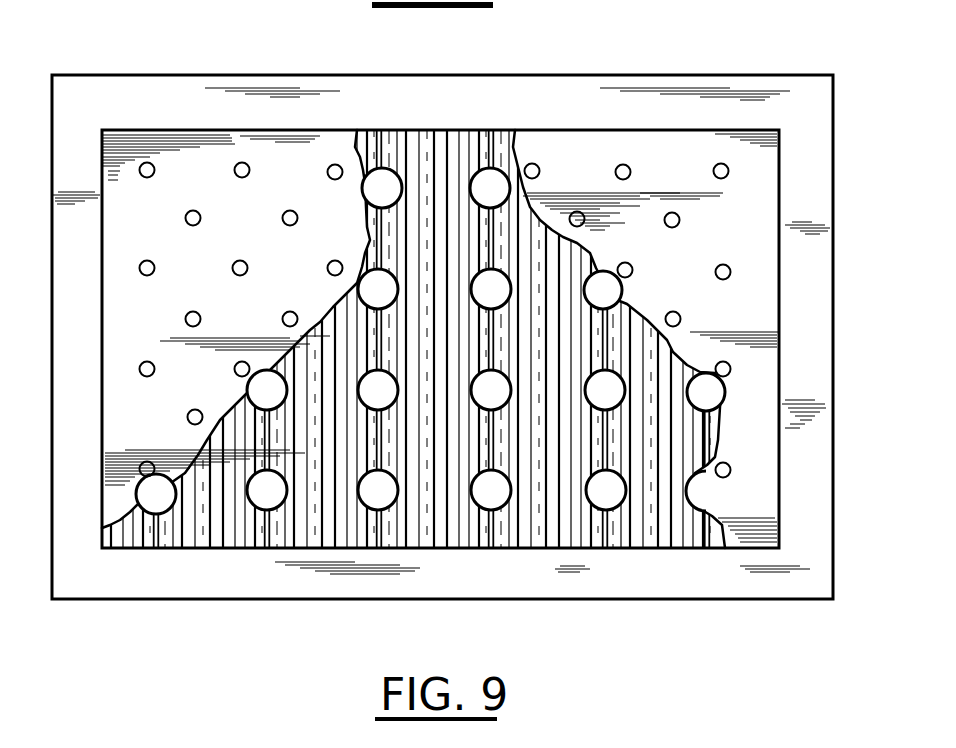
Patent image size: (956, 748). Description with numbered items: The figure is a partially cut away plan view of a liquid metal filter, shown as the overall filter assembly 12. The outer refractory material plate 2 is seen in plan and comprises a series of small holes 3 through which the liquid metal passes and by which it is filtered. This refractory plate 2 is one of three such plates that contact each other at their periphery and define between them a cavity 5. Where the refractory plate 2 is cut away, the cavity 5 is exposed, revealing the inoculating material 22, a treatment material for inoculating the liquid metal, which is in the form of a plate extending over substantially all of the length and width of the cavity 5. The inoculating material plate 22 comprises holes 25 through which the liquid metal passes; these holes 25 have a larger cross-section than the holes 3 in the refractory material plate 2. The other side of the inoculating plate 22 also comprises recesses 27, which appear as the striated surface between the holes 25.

The refractory material plate 2 is at (833, 196).
The holes 3 is at (243, 166).
The cavity 5 is at (124, 312).
The assembly 12 is at (694, 62).
The inoculating material 22 is at (389, 530).
The holes 25 is at (495, 180).
The recesses 27 is at (557, 503).